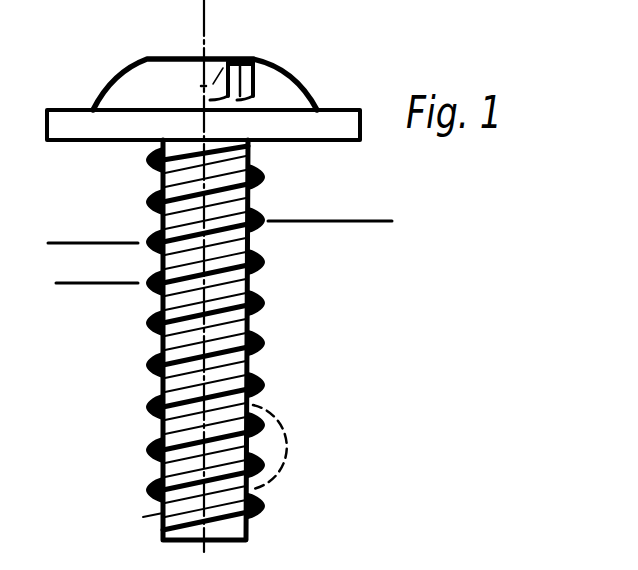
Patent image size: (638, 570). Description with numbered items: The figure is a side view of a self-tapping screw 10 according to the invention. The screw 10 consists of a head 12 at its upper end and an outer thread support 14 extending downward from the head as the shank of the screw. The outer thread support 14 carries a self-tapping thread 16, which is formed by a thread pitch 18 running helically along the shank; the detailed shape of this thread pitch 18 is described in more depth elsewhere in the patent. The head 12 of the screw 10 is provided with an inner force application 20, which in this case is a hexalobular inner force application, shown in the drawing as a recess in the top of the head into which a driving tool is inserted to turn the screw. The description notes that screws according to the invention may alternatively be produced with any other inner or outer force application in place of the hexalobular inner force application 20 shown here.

The self-tapping screw 10 is at (308, 54).
The head 12 is at (128, 88).
The outer thread support 14 is at (248, 320).
The self-tapping thread 16 is at (248, 214).
The thread pitch 18 is at (247, 260).
The inner force application 20 is at (229, 58).